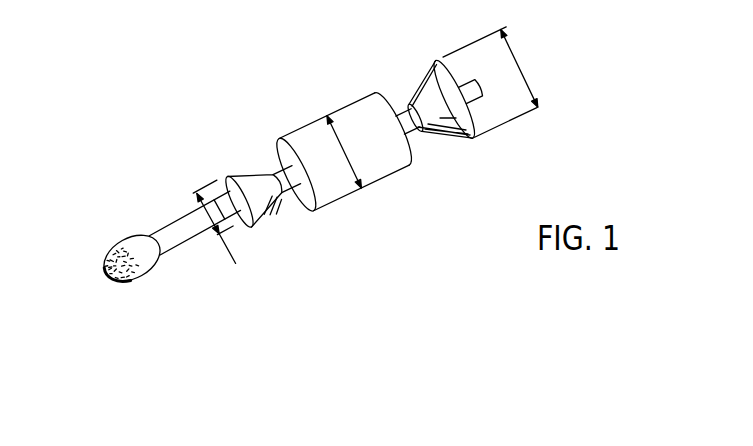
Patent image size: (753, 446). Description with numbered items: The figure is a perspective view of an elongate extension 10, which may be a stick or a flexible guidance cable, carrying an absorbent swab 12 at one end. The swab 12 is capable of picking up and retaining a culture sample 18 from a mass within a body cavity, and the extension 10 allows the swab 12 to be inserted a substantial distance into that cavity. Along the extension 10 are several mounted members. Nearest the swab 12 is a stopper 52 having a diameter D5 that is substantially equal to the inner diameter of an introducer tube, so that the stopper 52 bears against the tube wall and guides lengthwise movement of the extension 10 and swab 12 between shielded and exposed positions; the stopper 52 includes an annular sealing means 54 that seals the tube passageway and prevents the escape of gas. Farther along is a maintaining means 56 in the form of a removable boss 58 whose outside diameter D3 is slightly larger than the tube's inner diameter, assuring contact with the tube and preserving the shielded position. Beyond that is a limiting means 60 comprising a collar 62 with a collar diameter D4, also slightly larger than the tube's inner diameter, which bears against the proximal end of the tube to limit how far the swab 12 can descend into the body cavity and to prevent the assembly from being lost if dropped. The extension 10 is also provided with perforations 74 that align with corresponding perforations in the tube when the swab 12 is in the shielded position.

The elongate extension 10 is at (177, 237).
The absorbent swab 12 is at (117, 283).
The culture sample 18 is at (107, 265).
The stopper 52 is at (258, 178).
The sealing means 54 is at (240, 230).
The maintaining means 56 is at (340, 214).
The removable boss 58 is at (368, 102).
The limiting means 60 is at (487, 143).
The collar 62 is at (435, 65).
The perforations 74 is at (186, 226).
The boss outside diameter D3 is at (350, 151).
The collar diameter D4 is at (495, 82).
The stopper diameter D5 is at (233, 265).